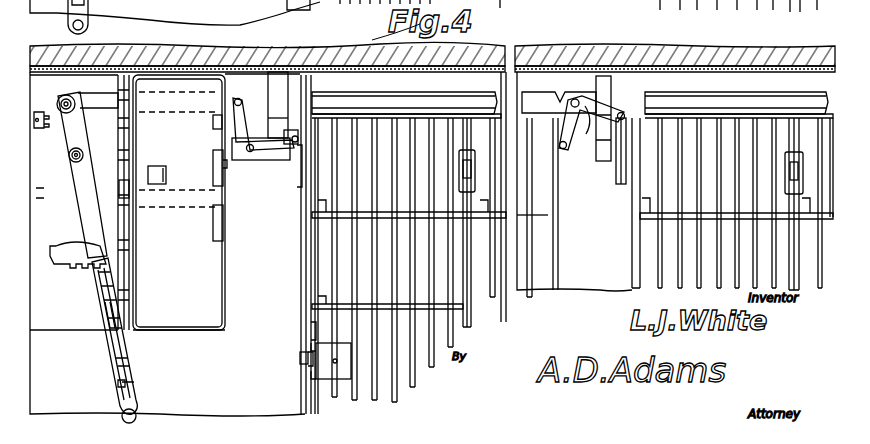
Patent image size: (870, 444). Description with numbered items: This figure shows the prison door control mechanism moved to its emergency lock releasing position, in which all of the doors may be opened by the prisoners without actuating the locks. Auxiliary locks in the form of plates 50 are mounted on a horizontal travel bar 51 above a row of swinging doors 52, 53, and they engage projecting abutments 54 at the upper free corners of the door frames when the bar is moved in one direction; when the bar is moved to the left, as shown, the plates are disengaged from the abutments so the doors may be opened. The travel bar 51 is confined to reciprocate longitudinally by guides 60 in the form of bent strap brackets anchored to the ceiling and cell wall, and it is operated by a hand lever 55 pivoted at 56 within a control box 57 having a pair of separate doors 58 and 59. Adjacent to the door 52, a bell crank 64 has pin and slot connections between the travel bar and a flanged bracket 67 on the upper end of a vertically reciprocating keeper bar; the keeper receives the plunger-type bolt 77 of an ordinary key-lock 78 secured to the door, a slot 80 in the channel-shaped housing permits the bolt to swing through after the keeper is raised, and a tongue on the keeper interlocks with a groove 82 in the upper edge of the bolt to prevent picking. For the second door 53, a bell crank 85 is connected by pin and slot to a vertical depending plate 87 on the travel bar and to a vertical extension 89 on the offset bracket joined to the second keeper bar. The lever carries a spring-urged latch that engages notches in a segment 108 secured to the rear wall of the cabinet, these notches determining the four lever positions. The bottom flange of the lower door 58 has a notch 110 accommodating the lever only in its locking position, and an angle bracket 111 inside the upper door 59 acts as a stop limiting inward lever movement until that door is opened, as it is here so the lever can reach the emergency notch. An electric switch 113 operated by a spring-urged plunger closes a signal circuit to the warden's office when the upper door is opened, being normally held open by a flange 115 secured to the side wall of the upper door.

The auxiliary lock plates 50 is at (308, 110).
The horizontal travel bar 51 is at (756, 94).
The swinging door 52 is at (310, 250).
The second swinging door 53 is at (632, 254).
The projecting abutments 54 is at (330, 125).
The hand lever 55 is at (122, 366).
The lever pivot 56 is at (70, 160).
The control box 57 is at (69, 339).
The lower door of control box 58 is at (225, 298).
The upper door of control box 59 is at (225, 85).
The guides 60 is at (286, 84).
The bell crank 64 is at (262, 152).
The flanged bracket 67 is at (292, 150).
The plunger-type bolt 77 is at (300, 362).
The key-lock 78 is at (325, 380).
The slot 80 is at (310, 375).
The groove 82 is at (298, 356).
The bell crank 85 is at (570, 150).
The vertical depending plate 87 is at (560, 110).
The vertical extension 89 is at (618, 150).
The segment 108 is at (54, 250).
The notch 110 is at (208, 332).
The angle bracket stop 111 is at (174, 156).
The electric switch 113 is at (36, 112).
The abutment or flange 115 is at (211, 126).